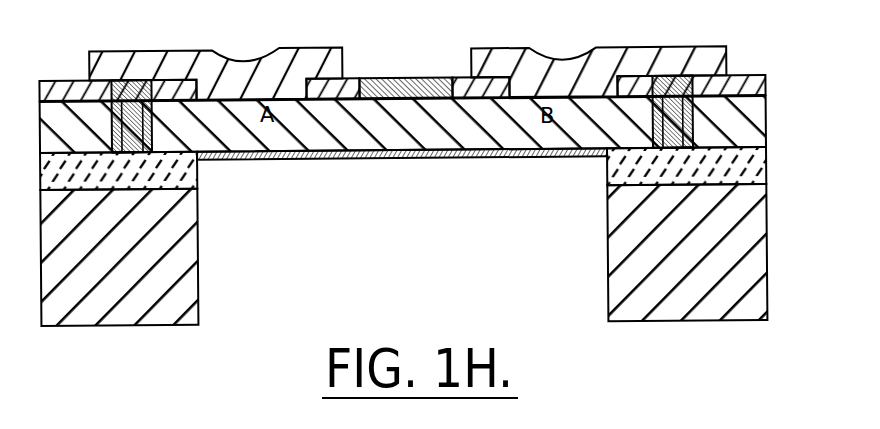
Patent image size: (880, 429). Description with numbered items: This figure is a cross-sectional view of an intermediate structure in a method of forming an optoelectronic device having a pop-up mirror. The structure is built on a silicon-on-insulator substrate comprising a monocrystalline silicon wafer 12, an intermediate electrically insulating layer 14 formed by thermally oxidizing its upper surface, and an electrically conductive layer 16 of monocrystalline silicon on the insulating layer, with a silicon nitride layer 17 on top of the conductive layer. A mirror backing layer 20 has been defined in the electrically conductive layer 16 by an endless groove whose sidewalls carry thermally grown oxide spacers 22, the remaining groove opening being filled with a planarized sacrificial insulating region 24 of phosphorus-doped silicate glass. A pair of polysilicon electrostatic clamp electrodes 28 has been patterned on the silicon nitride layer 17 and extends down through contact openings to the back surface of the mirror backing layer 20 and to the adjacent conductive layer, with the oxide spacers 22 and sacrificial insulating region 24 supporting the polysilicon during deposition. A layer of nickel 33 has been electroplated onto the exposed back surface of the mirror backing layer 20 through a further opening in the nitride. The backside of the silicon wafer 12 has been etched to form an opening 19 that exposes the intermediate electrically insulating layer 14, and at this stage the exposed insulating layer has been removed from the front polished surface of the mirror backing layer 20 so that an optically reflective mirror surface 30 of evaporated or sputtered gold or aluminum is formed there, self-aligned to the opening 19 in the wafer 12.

The monocrystalline silicon wafer 12 is at (431, 255).
The intermediate electrically insulating layer 14 is at (432, 163).
The electrically conductive layer 16 is at (432, 122).
The silicon nitride layer 17 is at (432, 100).
The opening 19 is at (249, 341).
The mirror backing layer 20 is at (410, 136).
The oxide spacers 22 is at (401, 114).
The sacrificial insulating region 24 is at (402, 167).
The polysilicon electrostatic clamp electrodes 28 is at (407, 60).
The optically reflective mirror surface 30 is at (402, 191).
The layer of nickel 33 is at (405, 70).